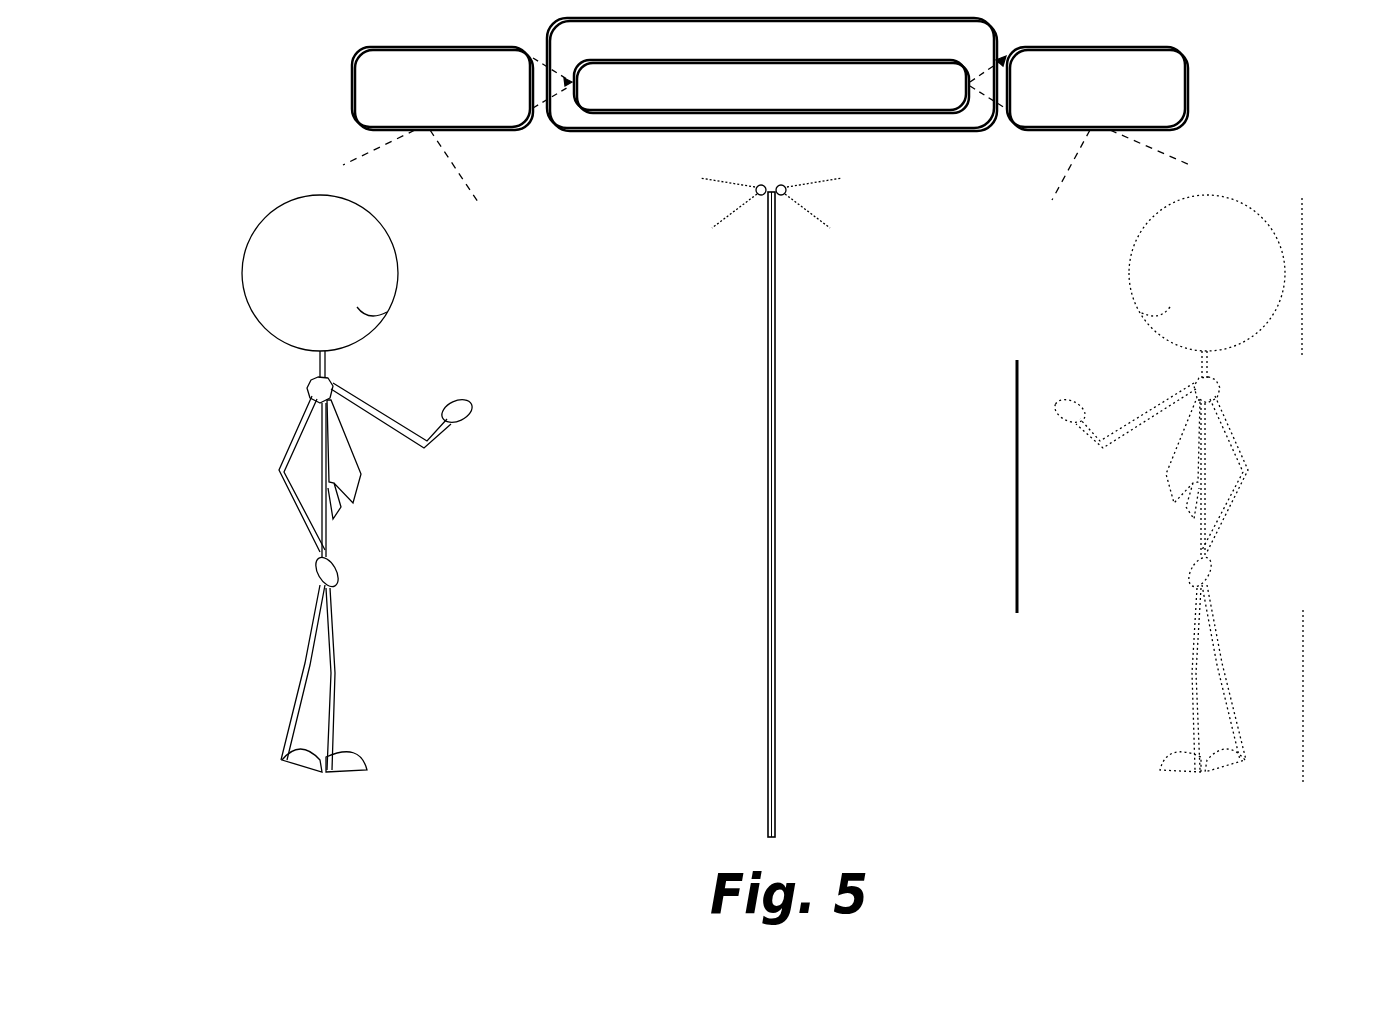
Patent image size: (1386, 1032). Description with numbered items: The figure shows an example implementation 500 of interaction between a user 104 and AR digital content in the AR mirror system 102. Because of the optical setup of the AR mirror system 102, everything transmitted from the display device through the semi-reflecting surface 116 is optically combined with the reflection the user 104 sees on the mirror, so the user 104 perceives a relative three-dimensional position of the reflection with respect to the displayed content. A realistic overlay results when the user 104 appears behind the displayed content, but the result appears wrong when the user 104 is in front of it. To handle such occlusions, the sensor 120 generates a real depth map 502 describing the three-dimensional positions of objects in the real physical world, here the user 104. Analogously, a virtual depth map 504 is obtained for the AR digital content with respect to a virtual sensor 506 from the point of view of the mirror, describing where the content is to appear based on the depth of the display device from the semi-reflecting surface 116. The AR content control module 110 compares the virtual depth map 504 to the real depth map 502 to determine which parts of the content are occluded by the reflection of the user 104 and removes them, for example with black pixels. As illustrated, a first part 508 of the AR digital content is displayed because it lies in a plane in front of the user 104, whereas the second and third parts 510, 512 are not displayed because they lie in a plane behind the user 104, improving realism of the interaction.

The example implementation 500 is at (190, 88).
The AR mirror system 102 is at (772, 74).
The AR content control module 110 is at (771, 86).
The real depth map 502 is at (457, 124).
The virtual depth map 504 is at (1080, 123).
The user 104 is at (375, 645).
The semi-reflecting surface 116 is at (770, 547).
The sensor 120 is at (759, 184).
The virtual sensor 506 is at (783, 184).
The first part of the AR digital content 508 is at (1015, 480).
The second part of the AR digital content 510 is at (1303, 272).
The third part of the AR digital content 512 is at (1305, 700).